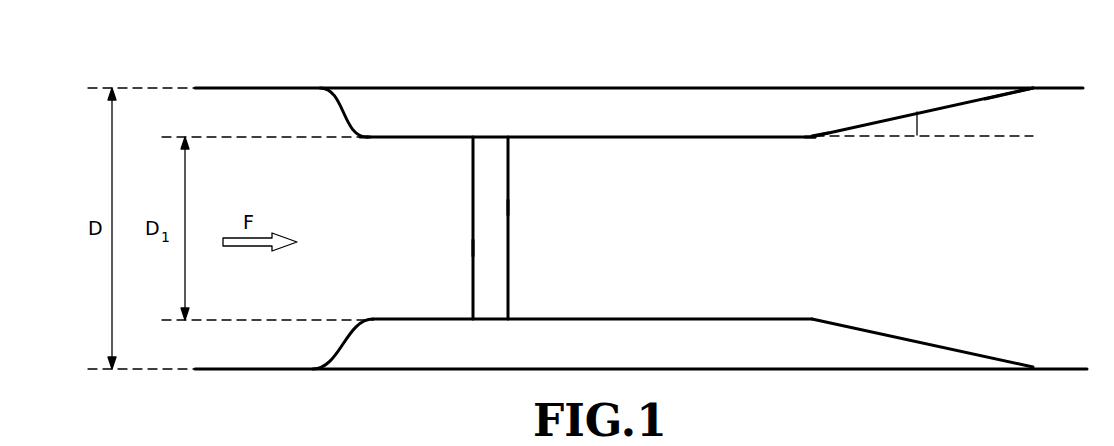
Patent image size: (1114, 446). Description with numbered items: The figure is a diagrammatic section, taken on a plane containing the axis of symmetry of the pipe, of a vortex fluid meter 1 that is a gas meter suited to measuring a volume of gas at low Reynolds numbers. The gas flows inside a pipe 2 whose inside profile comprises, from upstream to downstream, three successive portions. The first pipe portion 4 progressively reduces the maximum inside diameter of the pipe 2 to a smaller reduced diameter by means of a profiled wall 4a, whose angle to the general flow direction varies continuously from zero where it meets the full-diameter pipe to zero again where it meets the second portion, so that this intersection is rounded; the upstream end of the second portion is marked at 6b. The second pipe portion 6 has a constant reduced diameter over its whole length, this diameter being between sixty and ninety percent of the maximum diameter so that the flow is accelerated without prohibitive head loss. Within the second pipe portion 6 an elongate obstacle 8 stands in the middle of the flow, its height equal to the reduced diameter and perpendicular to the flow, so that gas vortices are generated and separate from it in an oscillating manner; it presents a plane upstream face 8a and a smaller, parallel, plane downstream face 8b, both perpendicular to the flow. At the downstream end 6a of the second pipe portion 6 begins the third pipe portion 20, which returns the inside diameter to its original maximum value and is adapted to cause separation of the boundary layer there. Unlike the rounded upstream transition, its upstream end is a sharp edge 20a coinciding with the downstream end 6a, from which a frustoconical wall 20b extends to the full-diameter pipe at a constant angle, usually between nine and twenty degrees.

The vortex fluid meter 1 is at (316, 75).
The pipe 2 is at (532, 87).
The first pipe portion 4 is at (357, 100).
The profiled wall 4a is at (345, 108).
The second pipe portion 6 is at (585, 136).
The downstream end of the second pipe portion 6a is at (815, 135).
The upstream end of inner duct 6b is at (366, 140).
The obstacle 8 is at (496, 156).
The upstream face 8a is at (472, 248).
The downstream face 8b is at (510, 207).
The third pipe portion 20 is at (937, 98).
The sharp edge 20a is at (815, 138).
The frustoconical wall 20b is at (990, 98).